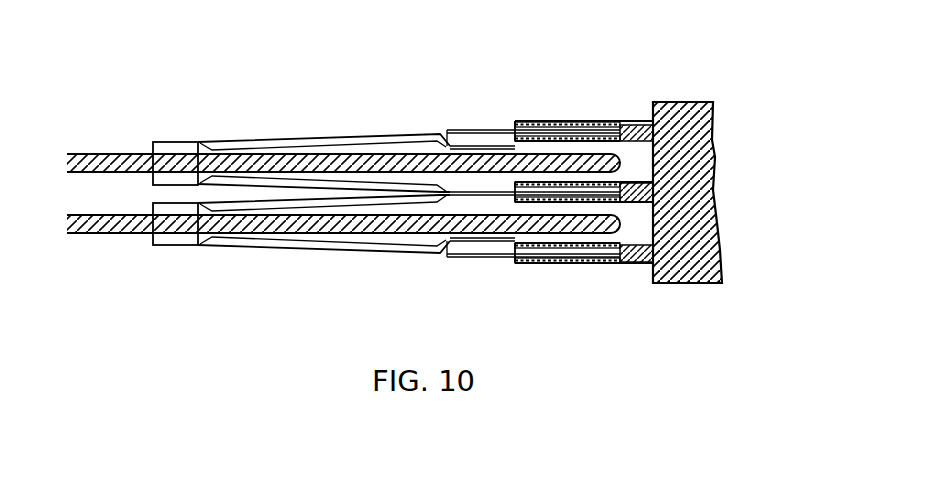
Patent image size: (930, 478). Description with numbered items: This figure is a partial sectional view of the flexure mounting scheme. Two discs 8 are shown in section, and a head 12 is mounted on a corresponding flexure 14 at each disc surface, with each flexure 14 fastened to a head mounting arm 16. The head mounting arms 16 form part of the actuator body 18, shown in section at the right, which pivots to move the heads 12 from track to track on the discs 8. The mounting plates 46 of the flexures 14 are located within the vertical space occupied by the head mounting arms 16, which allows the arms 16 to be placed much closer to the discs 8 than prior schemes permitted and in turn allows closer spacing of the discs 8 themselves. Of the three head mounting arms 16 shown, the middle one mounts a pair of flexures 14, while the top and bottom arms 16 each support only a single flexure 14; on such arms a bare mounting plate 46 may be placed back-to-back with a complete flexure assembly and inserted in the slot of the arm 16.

The disc 8 is at (357, 162).
The head 12 is at (173, 178).
The flexure 14 is at (290, 175).
The mounting plate 46 is at (500, 245).
The head mounting arm 16 is at (643, 182).
The actuator body 18 is at (690, 110).